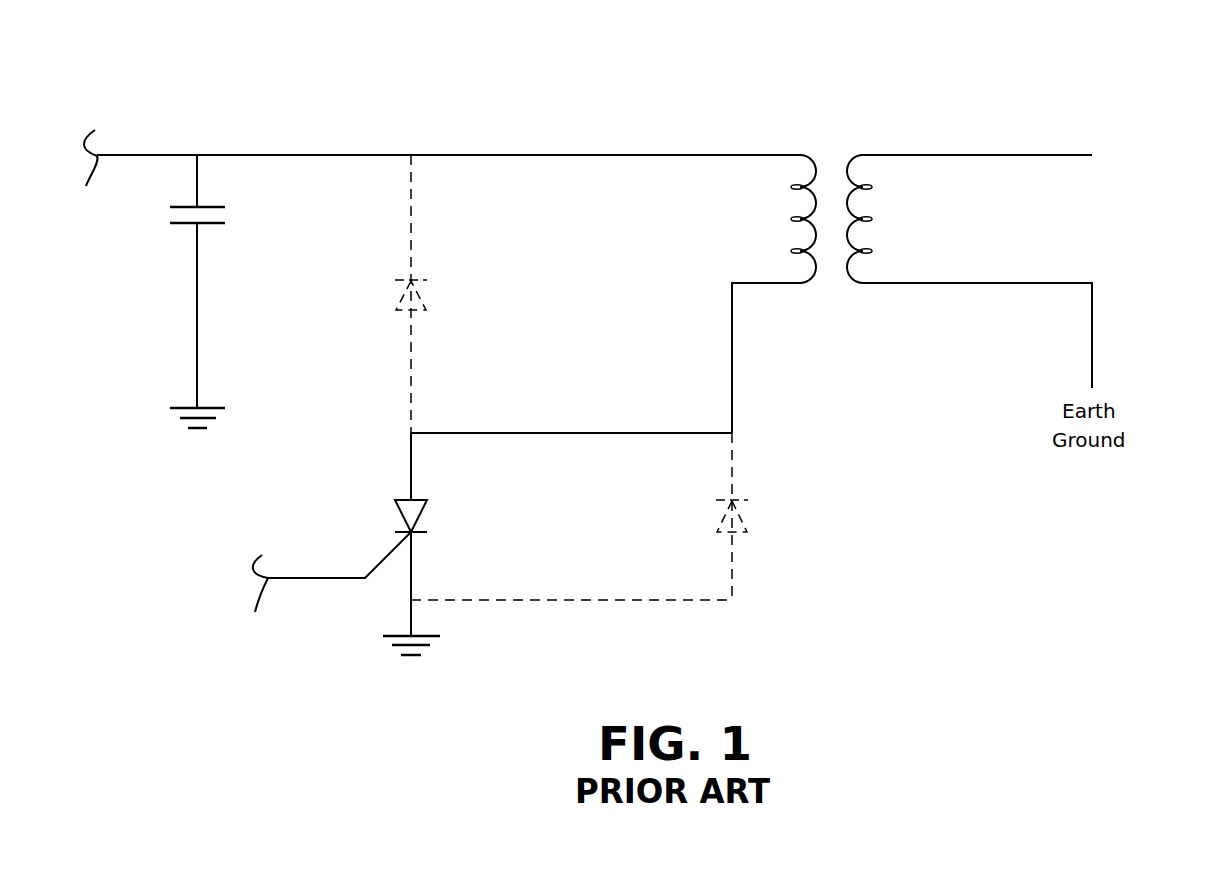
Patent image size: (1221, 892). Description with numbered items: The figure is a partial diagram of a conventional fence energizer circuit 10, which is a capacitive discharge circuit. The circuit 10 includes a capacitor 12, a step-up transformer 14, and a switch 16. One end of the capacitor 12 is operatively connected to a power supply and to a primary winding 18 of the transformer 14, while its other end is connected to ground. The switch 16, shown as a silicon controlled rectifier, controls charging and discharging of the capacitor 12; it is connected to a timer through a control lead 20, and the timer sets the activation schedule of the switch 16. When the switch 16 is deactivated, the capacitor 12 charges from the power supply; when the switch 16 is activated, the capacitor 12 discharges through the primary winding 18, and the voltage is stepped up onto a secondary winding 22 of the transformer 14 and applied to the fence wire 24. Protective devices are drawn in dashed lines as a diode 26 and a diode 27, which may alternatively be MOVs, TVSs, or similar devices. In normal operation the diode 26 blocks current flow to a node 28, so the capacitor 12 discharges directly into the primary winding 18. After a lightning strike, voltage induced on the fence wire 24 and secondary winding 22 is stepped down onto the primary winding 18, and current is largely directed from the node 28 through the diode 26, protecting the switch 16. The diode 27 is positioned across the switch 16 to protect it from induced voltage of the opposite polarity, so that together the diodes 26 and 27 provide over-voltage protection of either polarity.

The circuit 10 is at (618, 40).
The capacitor 12 is at (139, 239).
The step-up transformer 14 is at (831, 163).
The switch 16 is at (444, 504).
The primary winding 18 is at (772, 227).
The control lead 20 is at (316, 580).
The secondary winding 22 is at (891, 226).
The fence wire 24 is at (1152, 122).
The diode 26 is at (451, 286).
The diode 27 is at (766, 510).
The node 28 is at (576, 433).